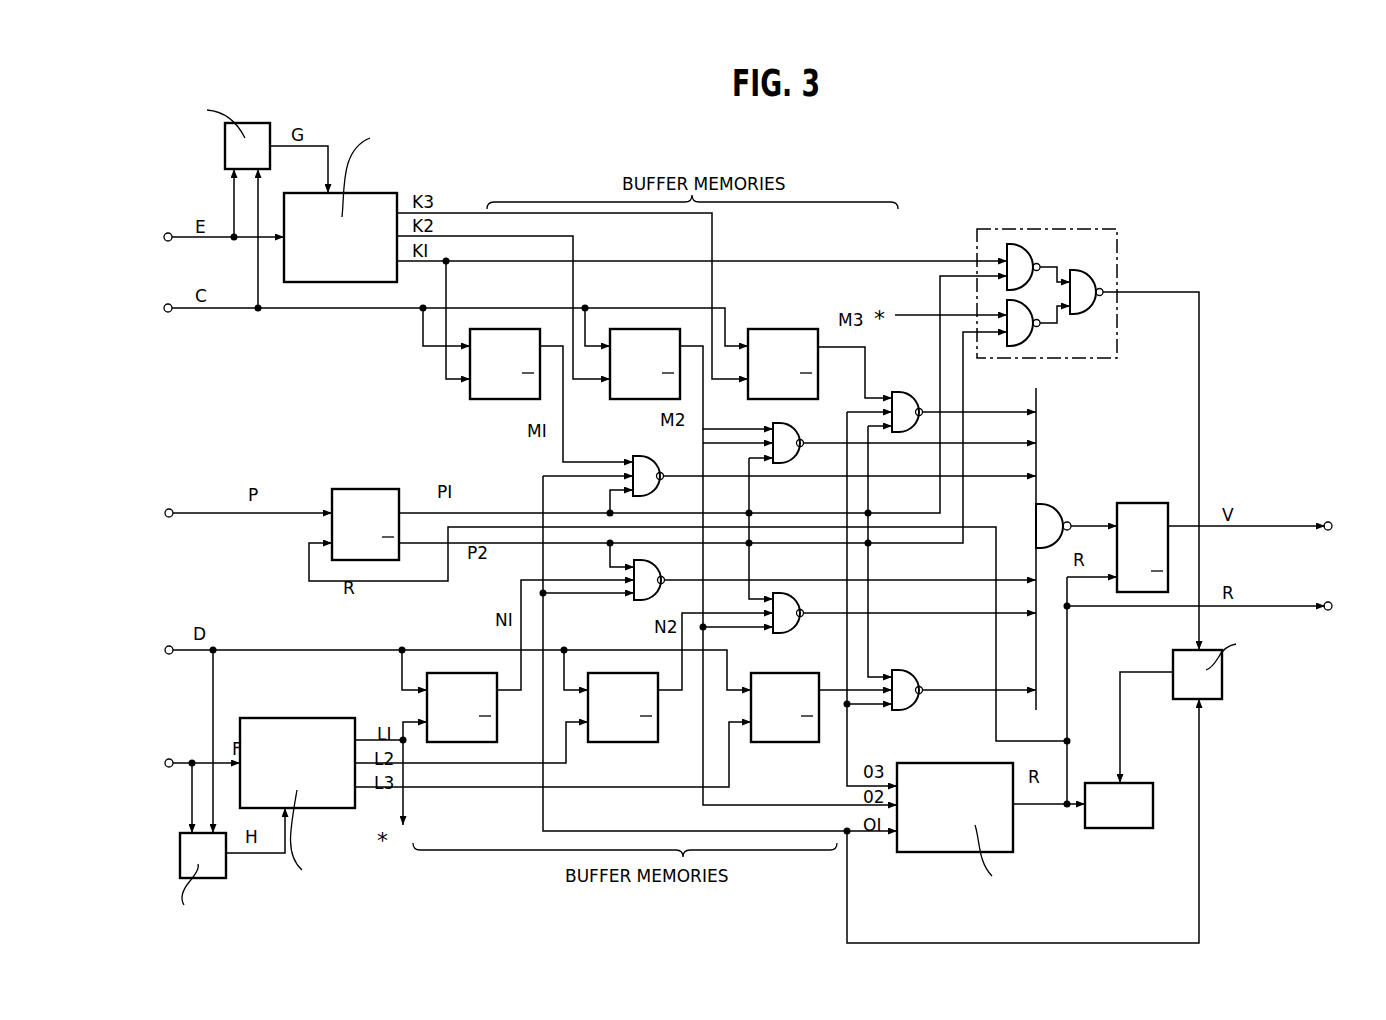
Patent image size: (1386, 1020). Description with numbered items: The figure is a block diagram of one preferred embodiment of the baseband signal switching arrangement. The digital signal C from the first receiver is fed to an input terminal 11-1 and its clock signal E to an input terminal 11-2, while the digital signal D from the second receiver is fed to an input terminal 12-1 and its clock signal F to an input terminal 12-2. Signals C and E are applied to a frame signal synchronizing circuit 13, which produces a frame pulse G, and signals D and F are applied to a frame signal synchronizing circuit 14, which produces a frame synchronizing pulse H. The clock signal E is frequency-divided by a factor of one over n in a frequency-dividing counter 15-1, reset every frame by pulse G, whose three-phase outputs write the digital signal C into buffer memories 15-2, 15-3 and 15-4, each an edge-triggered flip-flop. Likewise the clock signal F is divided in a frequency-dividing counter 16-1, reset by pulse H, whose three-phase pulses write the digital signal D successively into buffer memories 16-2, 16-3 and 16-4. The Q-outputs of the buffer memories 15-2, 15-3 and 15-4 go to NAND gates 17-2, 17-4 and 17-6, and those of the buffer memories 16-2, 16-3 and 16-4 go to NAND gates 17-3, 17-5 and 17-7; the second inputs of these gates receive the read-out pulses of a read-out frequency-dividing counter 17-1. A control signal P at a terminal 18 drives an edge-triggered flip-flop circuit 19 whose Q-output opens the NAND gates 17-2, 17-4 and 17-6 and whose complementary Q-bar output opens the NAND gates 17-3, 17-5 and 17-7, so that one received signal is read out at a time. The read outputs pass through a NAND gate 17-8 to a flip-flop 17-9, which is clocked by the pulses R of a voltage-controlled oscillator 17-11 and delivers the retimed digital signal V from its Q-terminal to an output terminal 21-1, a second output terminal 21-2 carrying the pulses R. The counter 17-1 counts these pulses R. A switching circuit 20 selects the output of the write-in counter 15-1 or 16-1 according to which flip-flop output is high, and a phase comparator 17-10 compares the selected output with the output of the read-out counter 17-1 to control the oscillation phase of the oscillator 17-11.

The input terminal 11-1 is at (168, 306).
The input terminal 11-2 is at (164, 238).
The input terminal 12-1 is at (169, 650).
The input terminal 12-2 is at (169, 765).
The frame signal synchronizing circuit 13 is at (225, 158).
The frame signal synchronizing circuit 14 is at (182, 858).
The frequency-dividing counter 15-1 is at (350, 193).
The buffer memory 15-2 is at (473, 398).
The buffer memory 15-3 is at (625, 398).
The buffer memory 15-4 is at (756, 406).
The frequency-dividing counter 16-1 is at (315, 812).
The buffer memory 16-2 is at (498, 717).
The buffer memory 16-3 is at (629, 743).
The buffer memory 16-4 is at (768, 744).
The frequency-dividing counter 17-1 is at (970, 856).
The NAND gate 17-2 is at (655, 468).
The NAND gate 17-3 is at (659, 592).
The NAND gate 17-4 is at (789, 436).
The NAND gate 17-5 is at (789, 606).
The NAND gate 17-6 is at (918, 366).
The NAND gate 17-7 is at (893, 676).
The NAND gate 17-8 is at (1045, 507).
The flip-flop 17-9 is at (1166, 483).
The phase comparator 17-10 is at (1169, 666).
The voltage-controlled oscillator 17-11 is at (1110, 830).
The terminal 18 is at (169, 513).
The edge-triggered flip-flop circuit 19 is at (378, 466).
The switching circuit 20 is at (1115, 357).
The output terminal 21-1 is at (1327, 523).
The output terminal 21-2 is at (1326, 602).